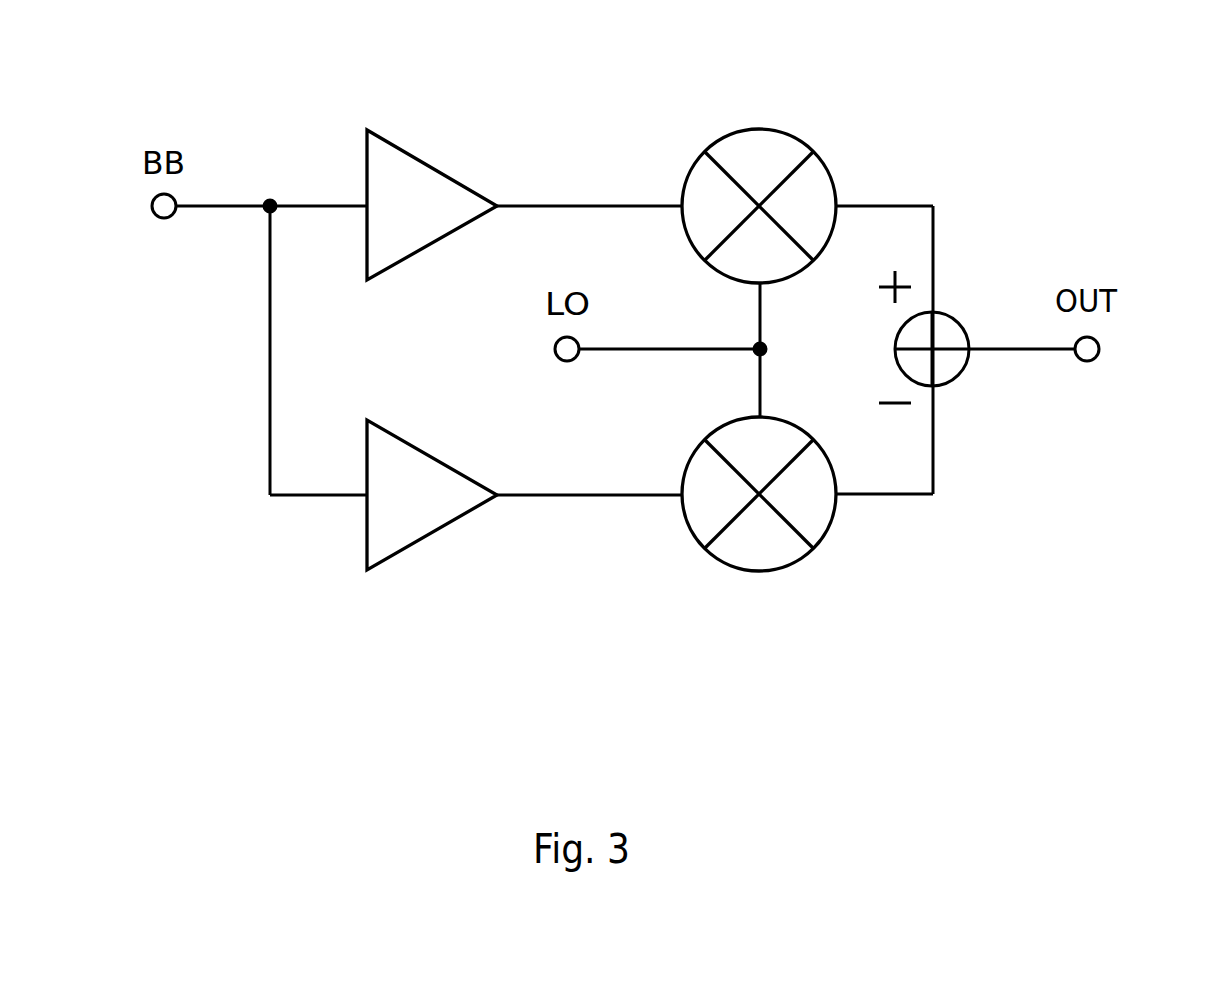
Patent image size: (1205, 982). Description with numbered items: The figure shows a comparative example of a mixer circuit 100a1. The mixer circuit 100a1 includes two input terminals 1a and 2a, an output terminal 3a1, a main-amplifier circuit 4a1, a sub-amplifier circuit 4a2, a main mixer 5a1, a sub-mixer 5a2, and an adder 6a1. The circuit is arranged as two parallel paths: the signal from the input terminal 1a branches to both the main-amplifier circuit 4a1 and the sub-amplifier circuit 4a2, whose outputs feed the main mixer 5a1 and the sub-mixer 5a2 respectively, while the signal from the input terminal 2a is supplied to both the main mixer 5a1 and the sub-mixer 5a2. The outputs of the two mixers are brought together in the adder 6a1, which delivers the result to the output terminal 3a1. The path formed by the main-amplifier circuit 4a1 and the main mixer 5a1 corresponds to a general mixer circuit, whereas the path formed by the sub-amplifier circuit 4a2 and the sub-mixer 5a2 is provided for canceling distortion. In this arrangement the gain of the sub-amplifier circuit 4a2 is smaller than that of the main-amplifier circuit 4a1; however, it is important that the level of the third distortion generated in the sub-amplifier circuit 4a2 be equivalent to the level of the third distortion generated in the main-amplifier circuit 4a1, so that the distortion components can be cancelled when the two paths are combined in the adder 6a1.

The input terminal 1a is at (152, 206).
The input terminal 2a is at (555, 350).
The output terminal 3a1 is at (1099, 349).
The main-amplifier circuit 4a1 is at (433, 167).
The sub-amplifier circuit 4a2 is at (433, 533).
The main mixer 5a1 is at (760, 128).
The sub-mixer 5a2 is at (760, 571).
The adder 6a1 is at (943, 312).
The mixer circuit 100a1 is at (600, 767).